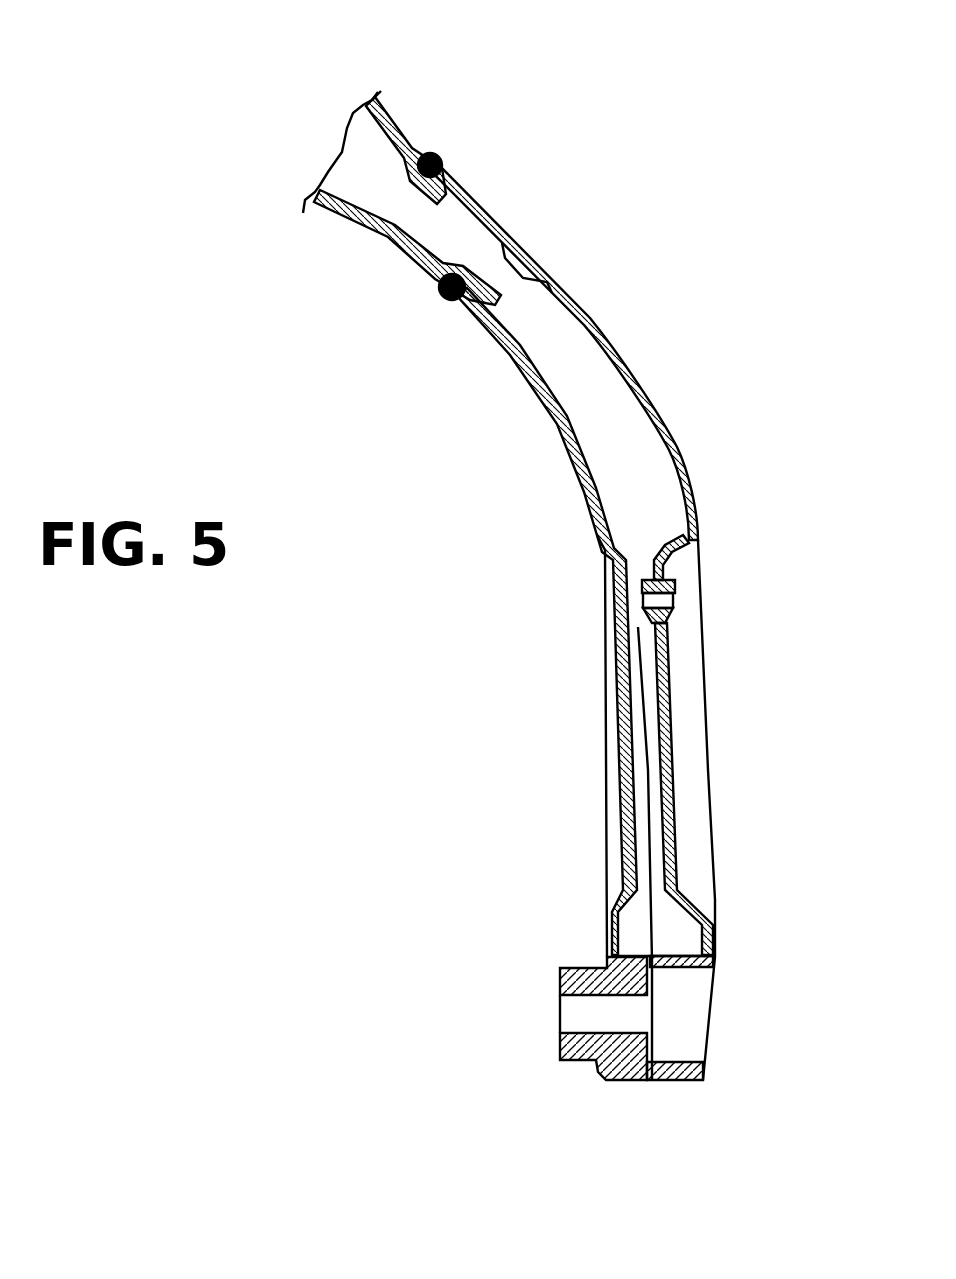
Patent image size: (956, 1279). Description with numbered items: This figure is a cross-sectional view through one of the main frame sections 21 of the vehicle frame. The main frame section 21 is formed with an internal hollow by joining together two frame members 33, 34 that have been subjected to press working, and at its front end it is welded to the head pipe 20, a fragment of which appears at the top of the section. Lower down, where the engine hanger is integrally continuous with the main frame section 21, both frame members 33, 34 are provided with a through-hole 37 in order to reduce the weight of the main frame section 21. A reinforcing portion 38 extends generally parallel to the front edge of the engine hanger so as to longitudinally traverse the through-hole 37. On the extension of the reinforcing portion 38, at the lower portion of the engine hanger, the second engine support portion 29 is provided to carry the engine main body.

The head pipe 20 is at (400, 130).
The main frame section 21 is at (644, 562).
The frame member 33 is at (600, 497).
The frame member 34 is at (630, 380).
The through-hole 37 is at (695, 820).
The reinforcing portion 38 is at (710, 768).
The second engine support portion 29 is at (628, 1080).